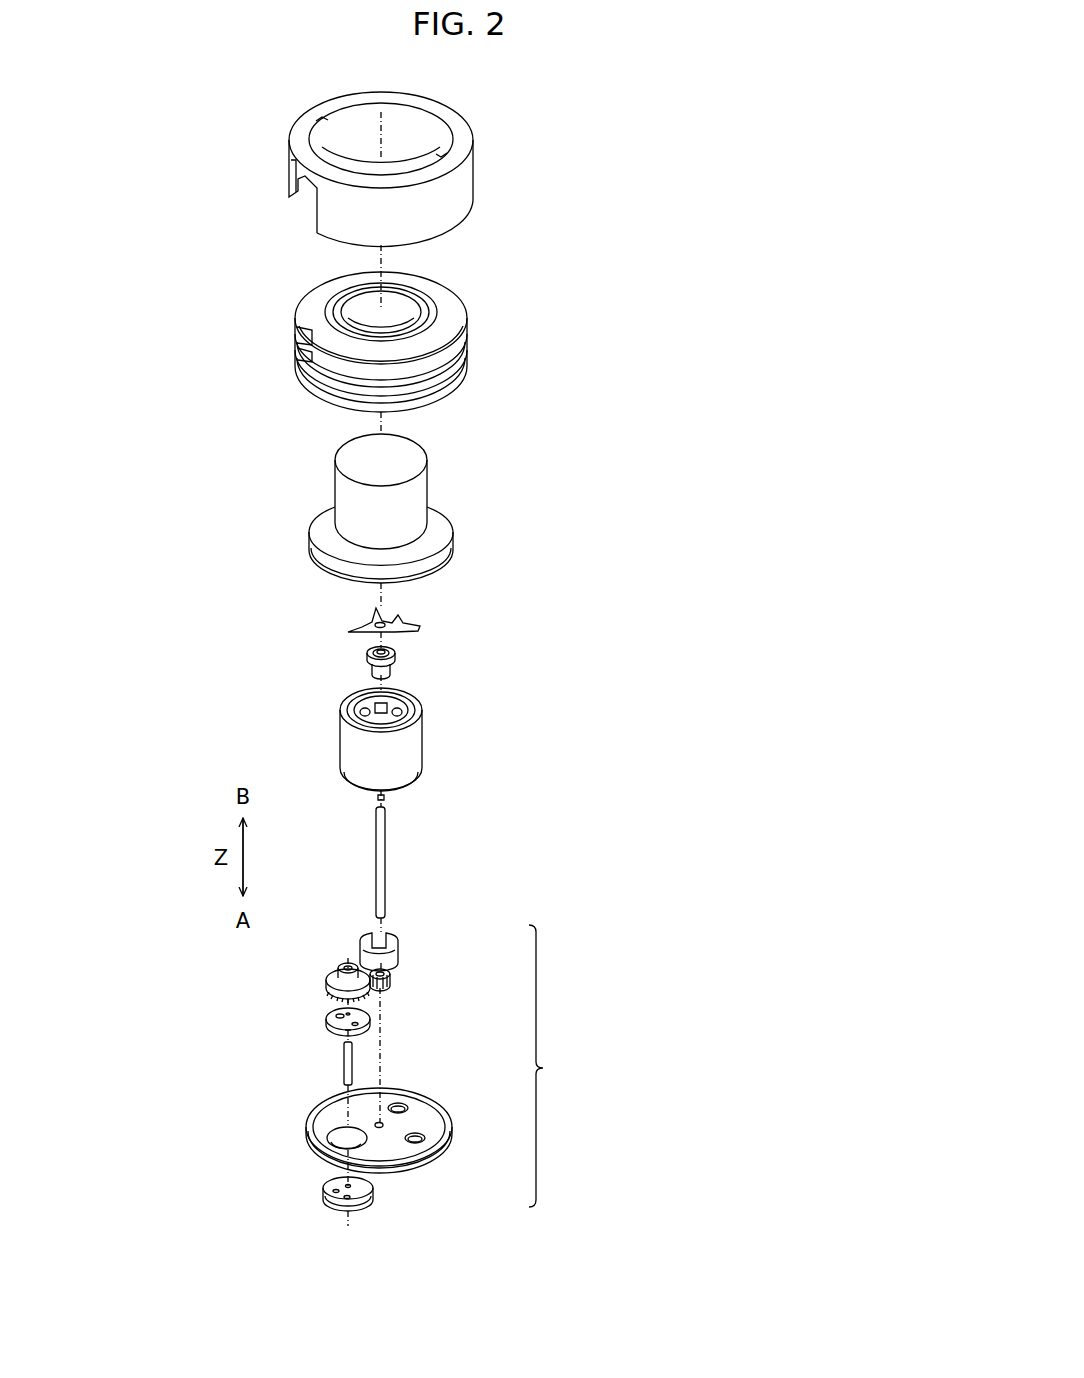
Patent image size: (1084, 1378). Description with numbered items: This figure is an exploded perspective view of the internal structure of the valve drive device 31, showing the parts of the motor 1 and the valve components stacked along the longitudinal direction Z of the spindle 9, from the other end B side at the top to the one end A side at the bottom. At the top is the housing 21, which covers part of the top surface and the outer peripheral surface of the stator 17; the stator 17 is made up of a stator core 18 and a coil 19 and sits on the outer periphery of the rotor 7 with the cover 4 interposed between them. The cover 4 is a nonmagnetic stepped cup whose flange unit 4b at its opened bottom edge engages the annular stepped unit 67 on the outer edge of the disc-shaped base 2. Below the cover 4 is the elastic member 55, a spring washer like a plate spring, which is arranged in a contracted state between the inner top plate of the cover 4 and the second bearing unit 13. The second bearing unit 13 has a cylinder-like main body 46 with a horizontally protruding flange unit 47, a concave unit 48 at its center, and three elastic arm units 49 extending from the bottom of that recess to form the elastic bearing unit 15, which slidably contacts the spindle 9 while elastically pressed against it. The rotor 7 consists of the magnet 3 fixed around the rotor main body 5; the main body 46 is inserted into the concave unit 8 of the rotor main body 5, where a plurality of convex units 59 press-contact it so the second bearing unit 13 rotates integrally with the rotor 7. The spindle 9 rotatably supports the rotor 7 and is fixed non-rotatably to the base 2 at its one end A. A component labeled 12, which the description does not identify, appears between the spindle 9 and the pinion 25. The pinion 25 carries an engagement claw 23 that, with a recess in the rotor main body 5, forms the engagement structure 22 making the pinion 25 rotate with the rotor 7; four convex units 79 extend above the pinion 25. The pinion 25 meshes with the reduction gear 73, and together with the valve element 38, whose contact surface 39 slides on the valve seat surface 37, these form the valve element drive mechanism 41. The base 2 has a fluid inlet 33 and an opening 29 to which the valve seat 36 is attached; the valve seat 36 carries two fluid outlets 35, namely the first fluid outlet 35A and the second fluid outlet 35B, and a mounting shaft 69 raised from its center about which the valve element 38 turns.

The motor 1 is at (512, 247).
The base 2 is at (375, 1100).
The magnet 3 is at (371, 740).
The cover 4 is at (417, 503).
The flange unit 4b is at (455, 562).
The rotor main body 5 is at (398, 704).
The rotor 7 is at (339, 731).
The concave unit 8 is at (371, 704).
The spindle 9 is at (386, 863).
The coupling 12 is at (366, 928).
The second bearing unit 13 is at (377, 642).
The elastic bearing unit 15 is at (370, 652).
The stator 17 is at (300, 294).
The stator core 18 is at (470, 365).
The coil 19 is at (300, 352).
The housing 21 is at (460, 122).
The engagement structure 22 is at (372, 939).
The engagement claw 23 is at (341, 928).
The pinion 25 is at (423, 984).
The opening 29 is at (340, 1139).
The valve drive device 31 is at (690, 78).
The fluid inlet 33 is at (400, 1105).
The fluid outlet 35 is at (342, 1193).
The first fluid outlet 35A is at (350, 1199).
The second fluid outlet 35B is at (337, 1193).
The valve seat 36 is at (342, 1193).
The valve seat surface 37 is at (345, 1186).
The valve element 38 is at (325, 1019).
The contact surface 39 is at (352, 1031).
The valve element drive mechanism 41 is at (550, 1066).
The main body 46 is at (392, 671).
The flange unit 47 is at (373, 665).
The concave unit 48 is at (393, 648).
The elastic arm units 49 is at (324, 650).
The elastic member 55 is at (355, 627).
The convex units 59 is at (382, 713).
The annular stepped unit 67 is at (452, 1129).
The mounting shaft 69 is at (344, 1063).
The reduction gear 73 is at (325, 983).
The convex units 79 is at (389, 971).